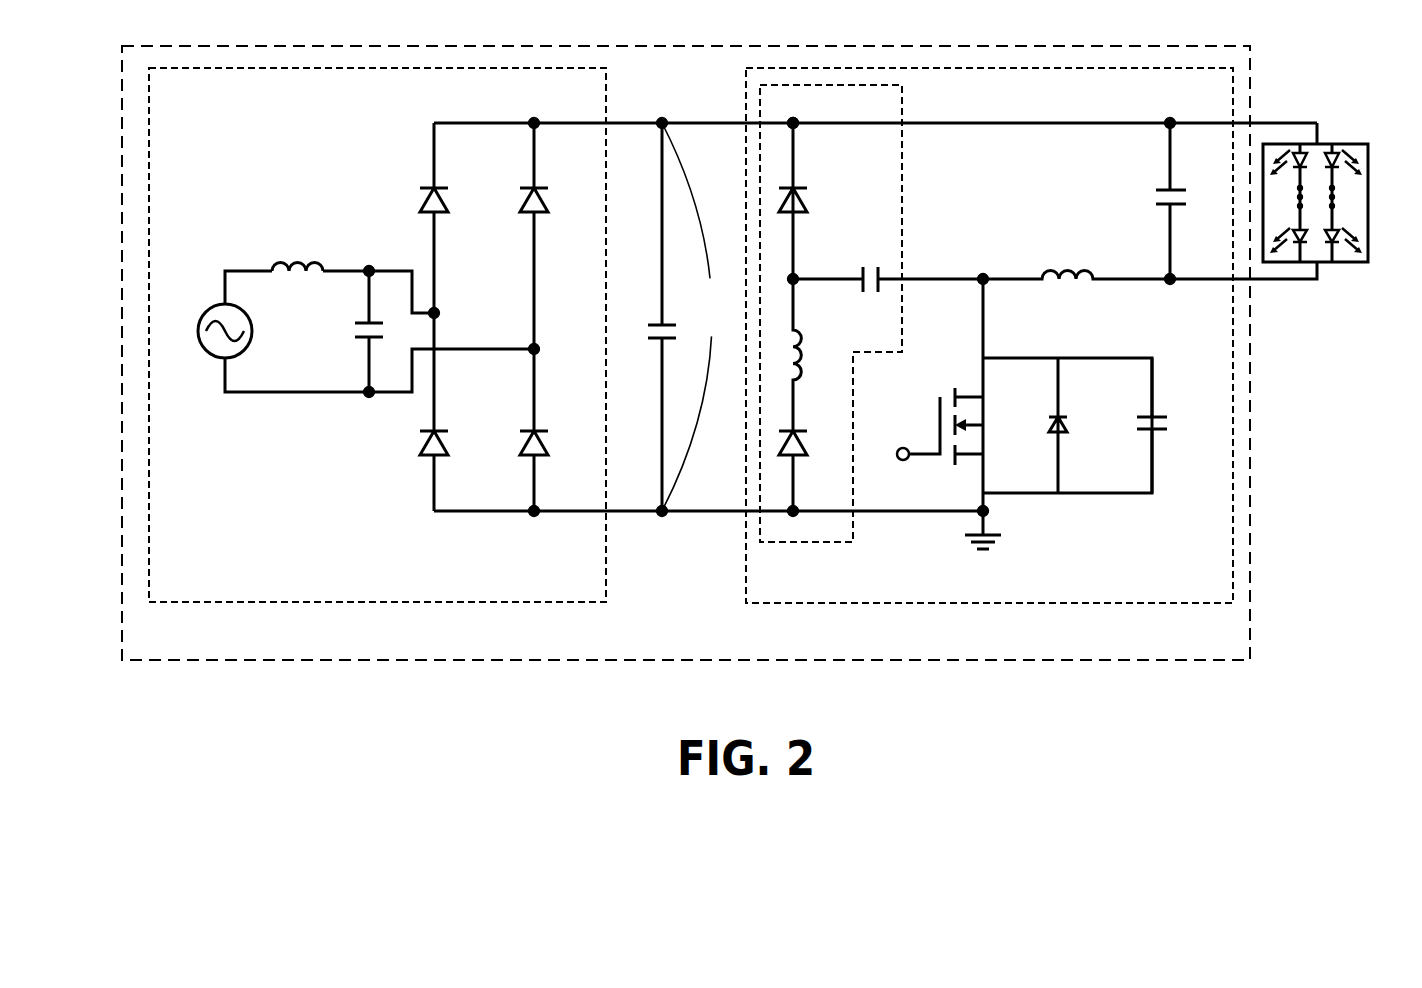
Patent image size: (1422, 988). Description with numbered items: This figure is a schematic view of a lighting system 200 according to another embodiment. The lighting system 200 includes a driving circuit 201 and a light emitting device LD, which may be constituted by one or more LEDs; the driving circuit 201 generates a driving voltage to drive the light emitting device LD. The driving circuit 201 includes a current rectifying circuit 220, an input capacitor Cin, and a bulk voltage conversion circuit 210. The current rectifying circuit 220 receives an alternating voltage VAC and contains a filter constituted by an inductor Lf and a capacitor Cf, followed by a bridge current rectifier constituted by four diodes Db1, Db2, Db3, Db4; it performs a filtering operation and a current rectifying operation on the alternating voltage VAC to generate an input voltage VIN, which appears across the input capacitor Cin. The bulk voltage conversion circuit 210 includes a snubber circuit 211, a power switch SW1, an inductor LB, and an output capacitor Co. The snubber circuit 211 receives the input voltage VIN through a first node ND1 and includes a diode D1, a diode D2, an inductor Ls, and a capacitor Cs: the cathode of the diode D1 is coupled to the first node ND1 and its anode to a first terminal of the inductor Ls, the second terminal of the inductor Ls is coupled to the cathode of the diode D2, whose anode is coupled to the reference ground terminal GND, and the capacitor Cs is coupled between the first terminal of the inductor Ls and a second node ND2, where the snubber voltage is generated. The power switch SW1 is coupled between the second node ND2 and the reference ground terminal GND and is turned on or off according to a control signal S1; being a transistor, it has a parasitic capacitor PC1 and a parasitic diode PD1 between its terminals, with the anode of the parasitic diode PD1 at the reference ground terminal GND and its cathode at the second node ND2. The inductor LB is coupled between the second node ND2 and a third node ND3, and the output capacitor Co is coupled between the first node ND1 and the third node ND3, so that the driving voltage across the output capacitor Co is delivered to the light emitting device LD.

The lighting system 200 is at (1410, 723).
The driving circuit 201 is at (1057, 660).
The bulk voltage conversion circuit 210 is at (1057, 603).
The snubber circuit 211 is at (818, 542).
The current rectifying circuit 220 is at (437, 602).
The alternating voltage VAC is at (205, 331).
The inductor Lf is at (297, 289).
The capacitor Cf is at (354, 331).
The diode Db1 is at (454, 204).
The diode Db2 is at (455, 447).
The diode Db3 is at (555, 204).
The diode Db4 is at (555, 447).
The input capacitor Cin is at (646, 317).
The input voltage VIN is at (697, 317).
The first node ND1 is at (796, 120).
The diode D1 is at (809, 201).
The capacitor Cs is at (888, 302).
The inductor Ls is at (813, 355).
The diode D2 is at (810, 470).
The control signal S1 is at (888, 454).
The power switch SW1 is at (972, 426).
The second node ND2 is at (982, 276).
The inductor LB is at (1076, 297).
The output capacitor Co is at (1157, 201).
The third node ND3 is at (1170, 283).
The parasitic diode PD1 is at (1080, 425).
The parasitic capacitor PC1 is at (1174, 425).
The reference ground terminal GND is at (984, 552).
The light emitting device LD is at (1355, 144).